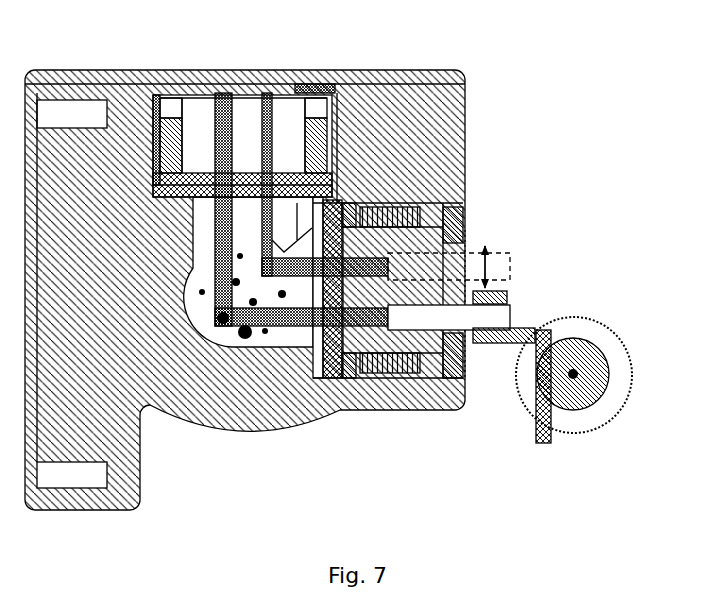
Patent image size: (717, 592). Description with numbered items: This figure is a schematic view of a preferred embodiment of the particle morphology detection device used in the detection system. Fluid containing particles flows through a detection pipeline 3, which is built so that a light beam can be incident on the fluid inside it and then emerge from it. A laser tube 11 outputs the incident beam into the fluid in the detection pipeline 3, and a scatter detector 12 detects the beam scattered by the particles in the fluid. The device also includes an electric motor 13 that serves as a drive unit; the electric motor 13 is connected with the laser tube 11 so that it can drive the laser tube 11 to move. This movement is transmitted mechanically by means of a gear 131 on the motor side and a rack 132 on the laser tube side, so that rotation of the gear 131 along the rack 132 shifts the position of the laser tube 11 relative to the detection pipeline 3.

The detection pipeline 3 is at (206, 334).
The laser tube 11 is at (497, 323).
The scatter detector 12 is at (246, 89).
The electric motor 13 is at (621, 426).
The gear 131 is at (573, 412).
The rack 132 is at (533, 432).